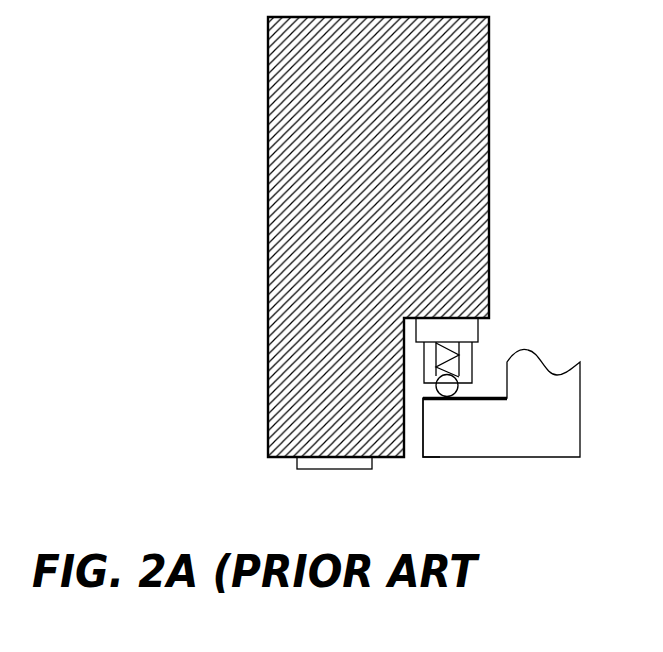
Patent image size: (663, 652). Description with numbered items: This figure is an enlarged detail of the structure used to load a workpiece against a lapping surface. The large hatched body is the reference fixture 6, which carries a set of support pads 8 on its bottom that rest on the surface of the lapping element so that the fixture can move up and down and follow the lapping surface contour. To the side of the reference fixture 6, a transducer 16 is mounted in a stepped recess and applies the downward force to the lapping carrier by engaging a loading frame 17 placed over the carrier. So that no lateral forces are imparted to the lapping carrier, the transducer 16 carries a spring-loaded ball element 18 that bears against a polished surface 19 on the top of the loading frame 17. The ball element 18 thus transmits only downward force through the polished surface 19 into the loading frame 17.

The reference fixture 6 is at (267, 260).
The support pads 8 is at (297, 468).
The transducer 16 is at (488, 287).
The loading frame 17 is at (510, 436).
The spring-loaded ball element 18 is at (428, 400).
The polished surface 19 is at (481, 397).